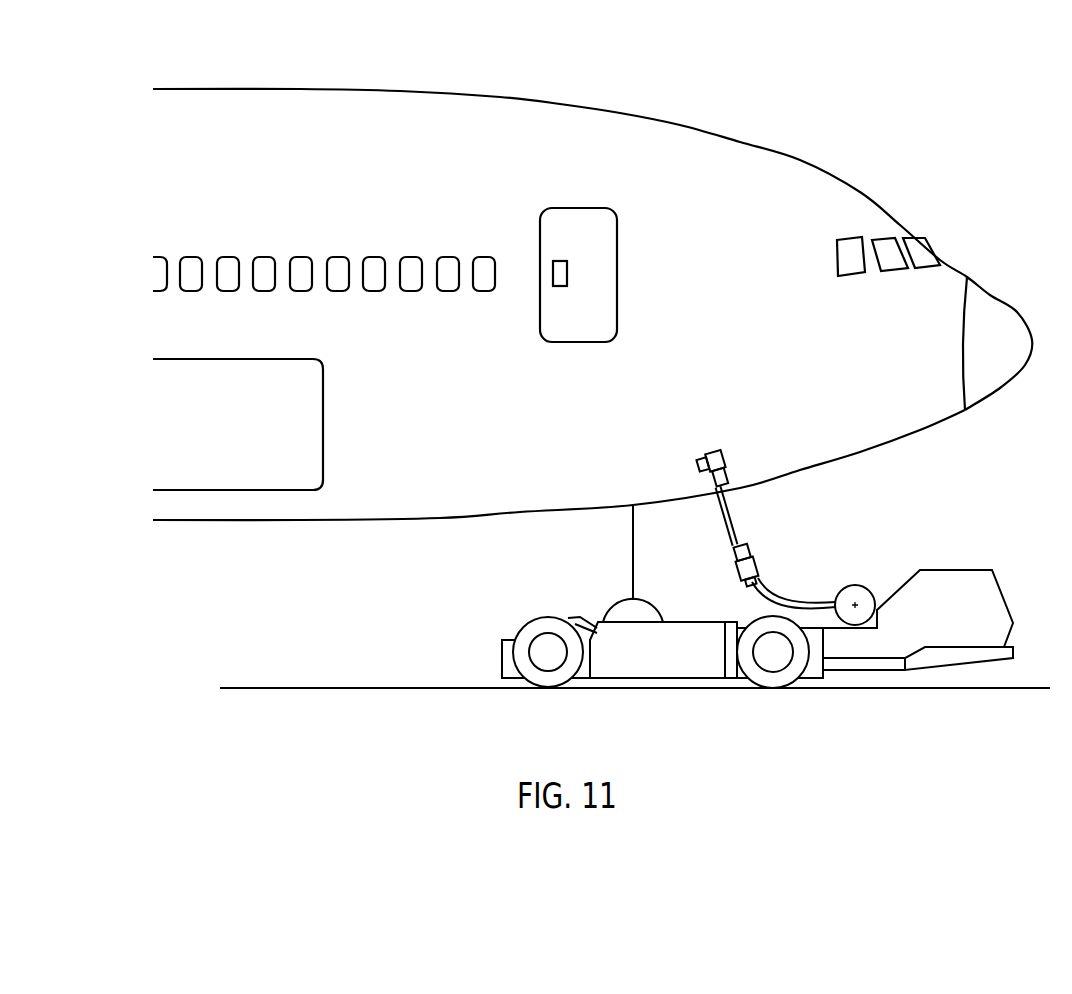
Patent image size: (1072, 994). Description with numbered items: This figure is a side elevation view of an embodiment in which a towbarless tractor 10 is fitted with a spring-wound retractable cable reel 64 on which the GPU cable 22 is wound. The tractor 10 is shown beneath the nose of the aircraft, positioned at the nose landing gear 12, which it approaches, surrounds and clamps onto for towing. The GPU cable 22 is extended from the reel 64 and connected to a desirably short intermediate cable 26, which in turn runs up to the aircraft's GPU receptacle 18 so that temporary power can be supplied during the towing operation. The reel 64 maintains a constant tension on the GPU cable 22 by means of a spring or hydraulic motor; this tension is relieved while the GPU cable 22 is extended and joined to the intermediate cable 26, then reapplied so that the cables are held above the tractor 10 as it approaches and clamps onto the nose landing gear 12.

The towbarless tractor 10 is at (976, 548).
The nose landing gear 12 is at (618, 592).
The GPU receptacle 18 is at (726, 456).
The GPU cable 22 is at (775, 592).
The intermediate cable 26 is at (736, 512).
The retractable cable reel 64 is at (862, 587).